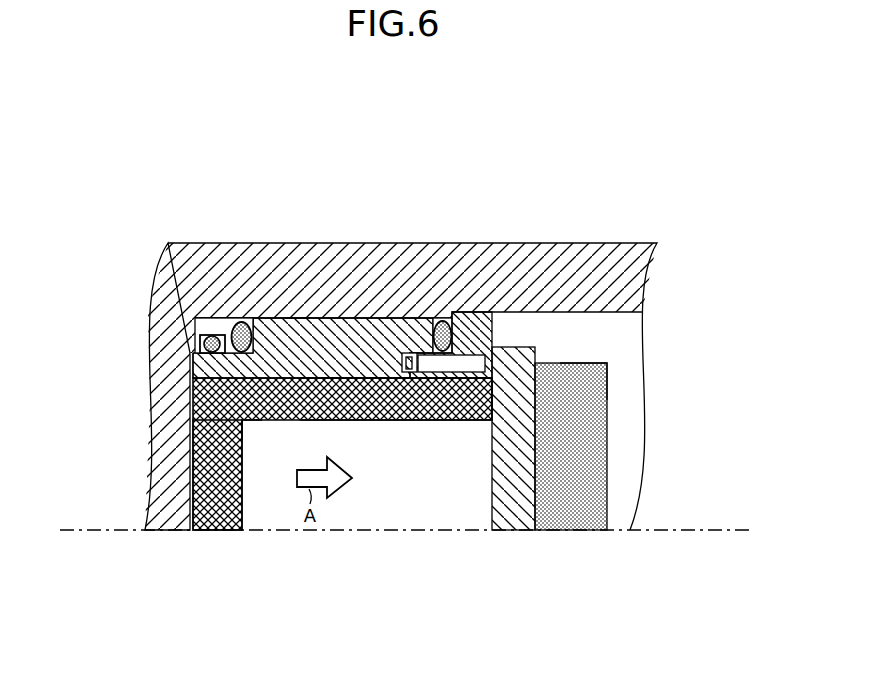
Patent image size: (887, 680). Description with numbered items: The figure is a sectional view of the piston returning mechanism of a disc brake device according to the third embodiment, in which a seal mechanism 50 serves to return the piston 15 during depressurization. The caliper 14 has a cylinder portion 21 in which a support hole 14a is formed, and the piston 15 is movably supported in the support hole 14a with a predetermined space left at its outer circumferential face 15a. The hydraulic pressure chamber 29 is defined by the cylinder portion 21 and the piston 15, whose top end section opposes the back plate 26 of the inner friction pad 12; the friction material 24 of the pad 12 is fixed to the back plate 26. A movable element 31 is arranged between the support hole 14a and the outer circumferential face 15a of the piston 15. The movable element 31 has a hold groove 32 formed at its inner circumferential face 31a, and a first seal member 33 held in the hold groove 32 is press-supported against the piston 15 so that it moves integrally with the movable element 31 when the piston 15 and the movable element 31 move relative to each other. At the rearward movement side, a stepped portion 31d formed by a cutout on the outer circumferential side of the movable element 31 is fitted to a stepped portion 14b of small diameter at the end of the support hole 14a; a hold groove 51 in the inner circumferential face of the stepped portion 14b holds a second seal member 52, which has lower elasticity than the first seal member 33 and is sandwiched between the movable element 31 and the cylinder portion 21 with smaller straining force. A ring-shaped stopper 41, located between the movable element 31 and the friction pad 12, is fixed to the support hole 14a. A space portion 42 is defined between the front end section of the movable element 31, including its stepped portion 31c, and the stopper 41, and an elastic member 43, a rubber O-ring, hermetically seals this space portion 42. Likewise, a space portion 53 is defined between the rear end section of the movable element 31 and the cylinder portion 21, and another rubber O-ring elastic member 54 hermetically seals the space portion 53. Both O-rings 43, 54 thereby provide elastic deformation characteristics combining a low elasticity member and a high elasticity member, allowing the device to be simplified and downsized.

The inner pad 12 is at (597, 363).
The caliper 14 is at (401, 320).
The cylinder portion 21 is at (590, 275).
The support hole 14a is at (296, 318).
The stepped portion 14b is at (221, 322).
The piston 15 is at (264, 392).
The outer circumferential face 15a is at (372, 380).
The friction material 24 is at (572, 530).
The back plate 26 is at (520, 530).
The hydraulic pressure chamber 29 is at (195, 427).
The movable element 31 is at (333, 340).
The inner circumferential face 31a is at (388, 422).
The stepped portion 31c is at (475, 378).
The stepped portion 31d is at (205, 357).
The hold groove 32 is at (438, 323).
The first seal member 33 is at (409, 378).
The stopper 41 is at (464, 378).
The space portion 42 is at (452, 378).
The elastic member 43 is at (448, 247).
The seal mechanism 50 is at (148, 247).
The hold groove 51 is at (213, 340).
The second seal member 52 is at (203, 338).
The space portion 53 is at (245, 272).
The elastic member 54 is at (245, 420).